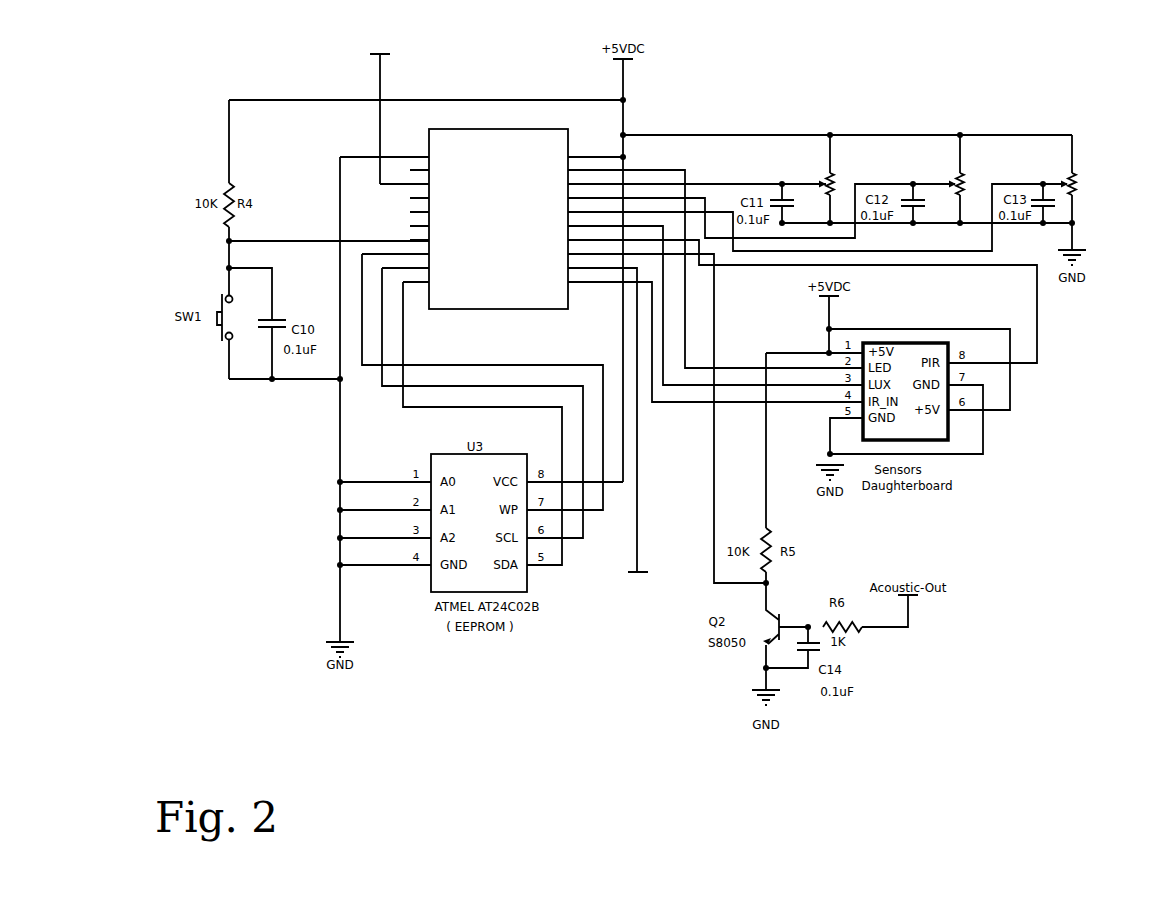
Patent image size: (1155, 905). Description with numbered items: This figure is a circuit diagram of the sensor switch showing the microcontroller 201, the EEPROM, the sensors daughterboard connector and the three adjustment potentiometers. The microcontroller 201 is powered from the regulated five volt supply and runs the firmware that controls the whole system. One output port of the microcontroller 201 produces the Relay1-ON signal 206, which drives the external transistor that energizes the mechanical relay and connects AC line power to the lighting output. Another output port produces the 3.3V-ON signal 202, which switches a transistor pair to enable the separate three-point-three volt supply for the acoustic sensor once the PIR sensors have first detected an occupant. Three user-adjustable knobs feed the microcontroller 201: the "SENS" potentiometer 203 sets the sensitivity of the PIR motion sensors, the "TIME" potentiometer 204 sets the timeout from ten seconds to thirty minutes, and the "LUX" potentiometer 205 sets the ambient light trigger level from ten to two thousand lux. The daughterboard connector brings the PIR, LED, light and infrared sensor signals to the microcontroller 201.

The microcontroller U2 201 is at (505, 121).
The 3.3V-ON 202 is at (655, 555).
The "SENS" potentiometer 203 is at (847, 102).
The "TIME" potentiometer 204 is at (972, 100).
The "LUX" potentiometer 205 is at (1082, 100).
The Relay1-ON 206 is at (410, 35).